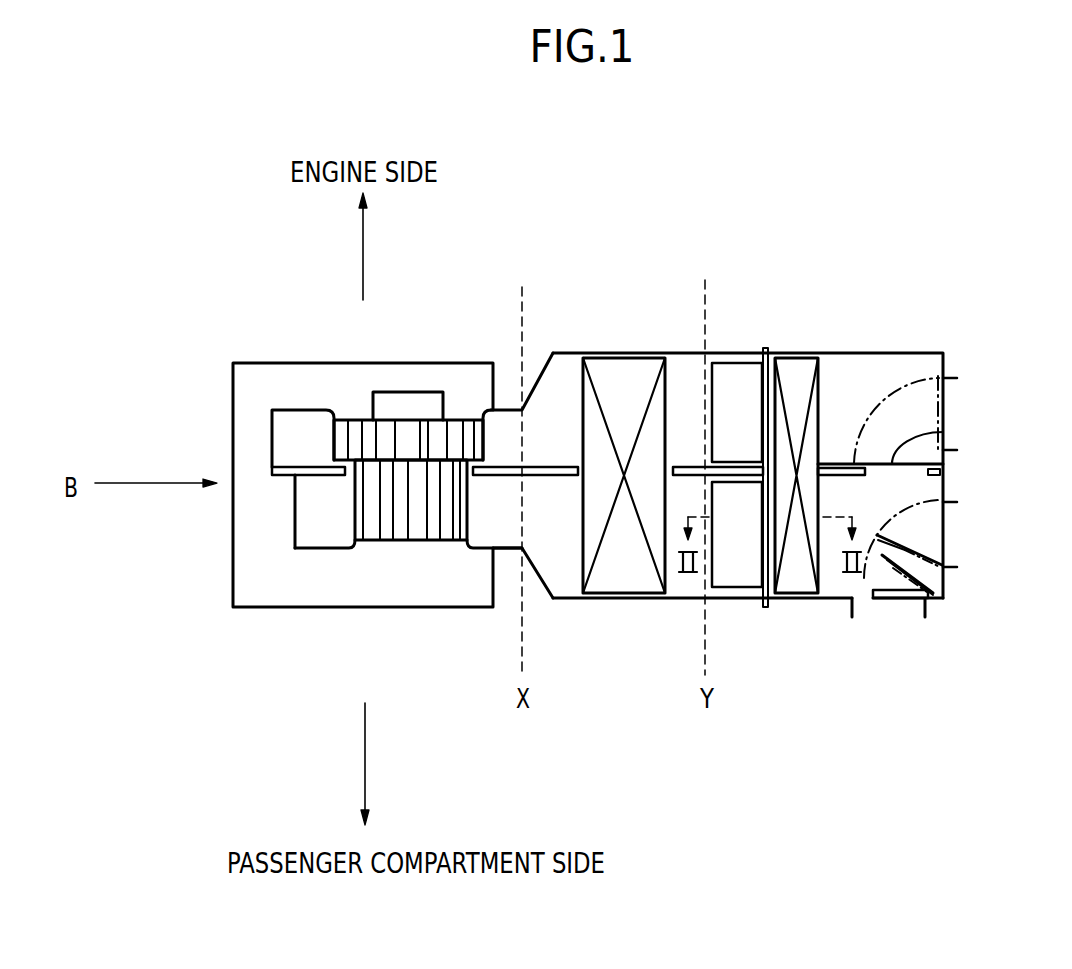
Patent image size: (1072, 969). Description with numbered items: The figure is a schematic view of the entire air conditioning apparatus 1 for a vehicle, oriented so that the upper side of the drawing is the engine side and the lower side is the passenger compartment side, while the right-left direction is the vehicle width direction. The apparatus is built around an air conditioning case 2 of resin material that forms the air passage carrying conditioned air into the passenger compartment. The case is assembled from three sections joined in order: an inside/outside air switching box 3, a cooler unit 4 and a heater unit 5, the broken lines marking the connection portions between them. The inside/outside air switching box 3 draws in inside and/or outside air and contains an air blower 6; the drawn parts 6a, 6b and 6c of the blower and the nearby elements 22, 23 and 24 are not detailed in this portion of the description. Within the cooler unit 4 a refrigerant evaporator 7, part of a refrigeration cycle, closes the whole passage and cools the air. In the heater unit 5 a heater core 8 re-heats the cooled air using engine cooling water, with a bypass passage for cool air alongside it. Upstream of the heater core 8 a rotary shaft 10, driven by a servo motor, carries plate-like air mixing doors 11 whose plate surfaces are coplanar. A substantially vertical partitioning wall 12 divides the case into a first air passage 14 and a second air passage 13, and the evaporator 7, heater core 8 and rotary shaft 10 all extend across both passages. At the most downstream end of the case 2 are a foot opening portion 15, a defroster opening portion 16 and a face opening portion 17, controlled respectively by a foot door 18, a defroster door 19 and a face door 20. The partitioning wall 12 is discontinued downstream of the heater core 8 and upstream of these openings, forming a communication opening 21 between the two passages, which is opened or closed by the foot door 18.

The air conditioning apparatus 1 is at (717, 302).
The air conditioning case 2 is at (630, 353).
The inside/outside air switching box 3 is at (412, 357).
The cooler unit 4 is at (658, 618).
The heater unit 5 is at (842, 622).
The air blower 6 is at (341, 510).
The motor rotor 6a is at (393, 540).
The stator coil 6b is at (387, 430).
The motor yoke 6c is at (430, 392).
The refrigerant evaporator 7 is at (623, 582).
The heater core 8 is at (798, 580).
The rotary shaft 10 is at (767, 350).
The air mixing doors 11 is at (737, 383).
The partitioning wall 12 is at (560, 468).
The second air passage 13 is at (547, 395).
The first air passage 14 is at (568, 575).
The foot opening portion 15 is at (947, 400).
The defroster opening portion 16 is at (948, 528).
The face opening portion 17 is at (910, 608).
The foot door 18 is at (893, 441).
The defroster door 19 is at (947, 552).
The face door 20 is at (893, 602).
The communication opening 21 is at (905, 483).
The motor shaft 22 is at (295, 520).
The motor bracket 23 is at (272, 422).
The fan boss 24 is at (295, 473).